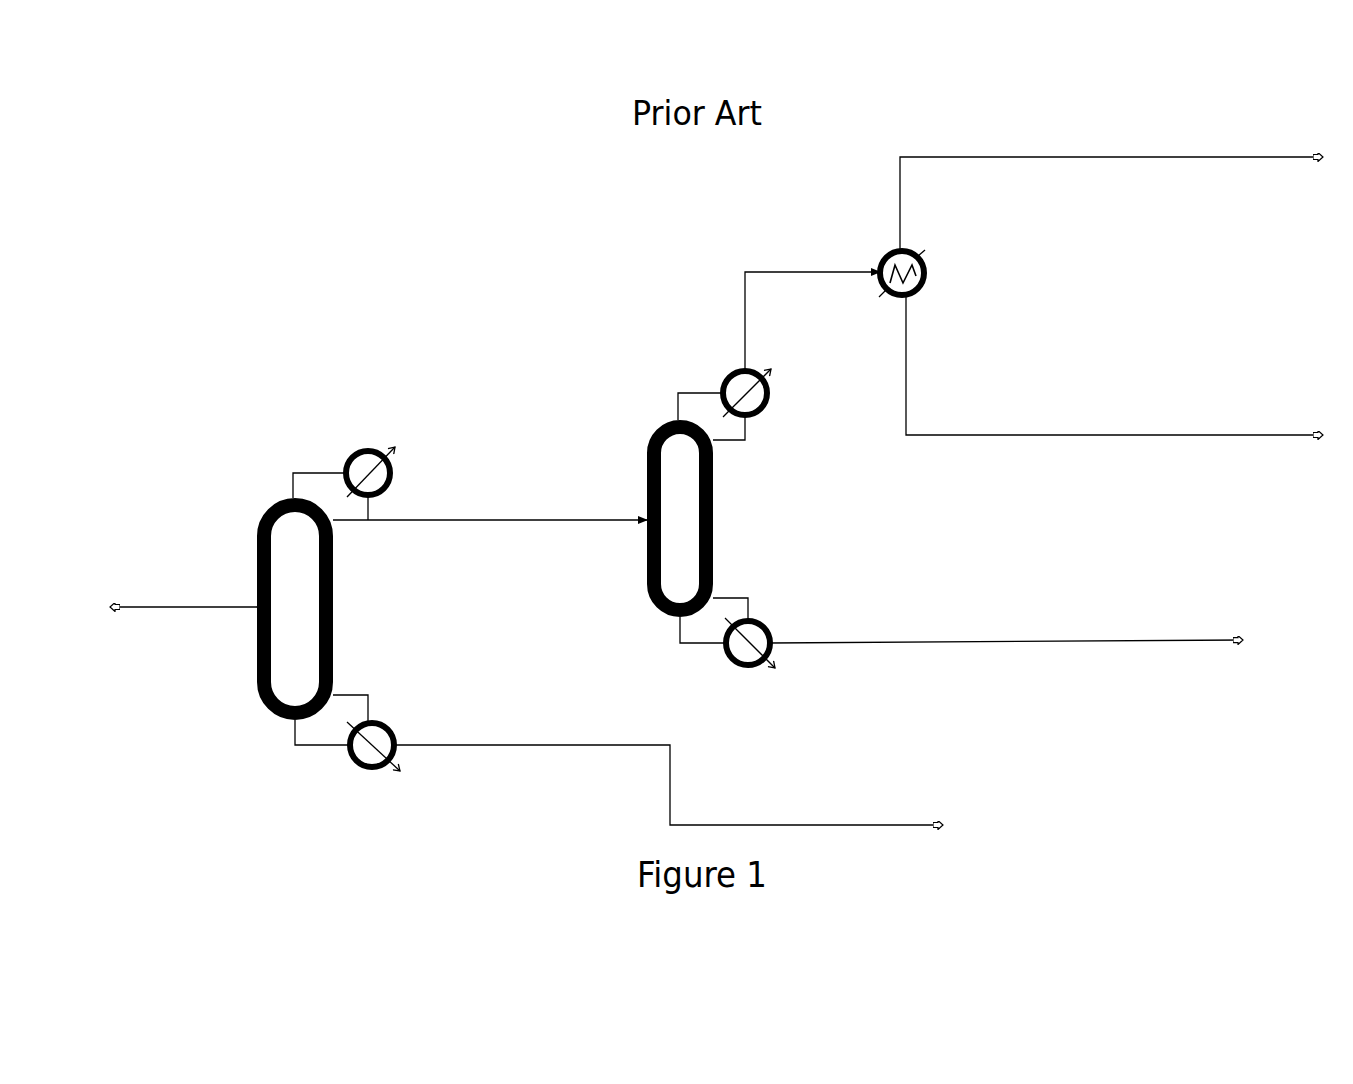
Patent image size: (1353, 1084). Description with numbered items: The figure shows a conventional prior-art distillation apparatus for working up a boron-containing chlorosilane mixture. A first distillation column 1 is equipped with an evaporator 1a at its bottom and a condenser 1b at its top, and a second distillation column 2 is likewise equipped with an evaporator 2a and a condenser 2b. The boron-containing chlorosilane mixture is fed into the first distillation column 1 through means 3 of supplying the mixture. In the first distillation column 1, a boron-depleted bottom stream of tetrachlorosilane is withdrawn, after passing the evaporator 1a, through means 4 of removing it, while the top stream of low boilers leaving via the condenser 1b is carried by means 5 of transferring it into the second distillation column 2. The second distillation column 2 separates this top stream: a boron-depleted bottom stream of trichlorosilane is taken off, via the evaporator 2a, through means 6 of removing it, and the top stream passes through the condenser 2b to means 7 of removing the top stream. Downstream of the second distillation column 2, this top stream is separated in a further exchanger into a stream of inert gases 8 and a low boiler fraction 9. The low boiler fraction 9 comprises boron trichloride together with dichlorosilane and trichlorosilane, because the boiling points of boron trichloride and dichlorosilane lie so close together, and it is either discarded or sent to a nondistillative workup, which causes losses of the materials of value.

The first distillation column 1 is at (265, 508).
The evaporator 1a is at (392, 730).
The condenser 1b is at (377, 452).
The second distillation column 2 is at (645, 440).
The evaporator 2a is at (770, 632).
The condenser 2b is at (733, 375).
The means of supplying a boron-containing chlorosilane mixture 3 is at (182, 607).
The means of removing a boron-depleted bottom stream of tetrachlorosilane 4 is at (848, 825).
The means of transferring a top stream of low boilers 5 is at (515, 520).
The means of removing a boron-depleted bottom stream of trichlorosilane 6 is at (1137, 642).
The means of removing a top stream from the second distillation column 7 is at (743, 272).
The stream of inert gases 8 is at (1197, 157).
The low boiler fraction 9 is at (1197, 435).